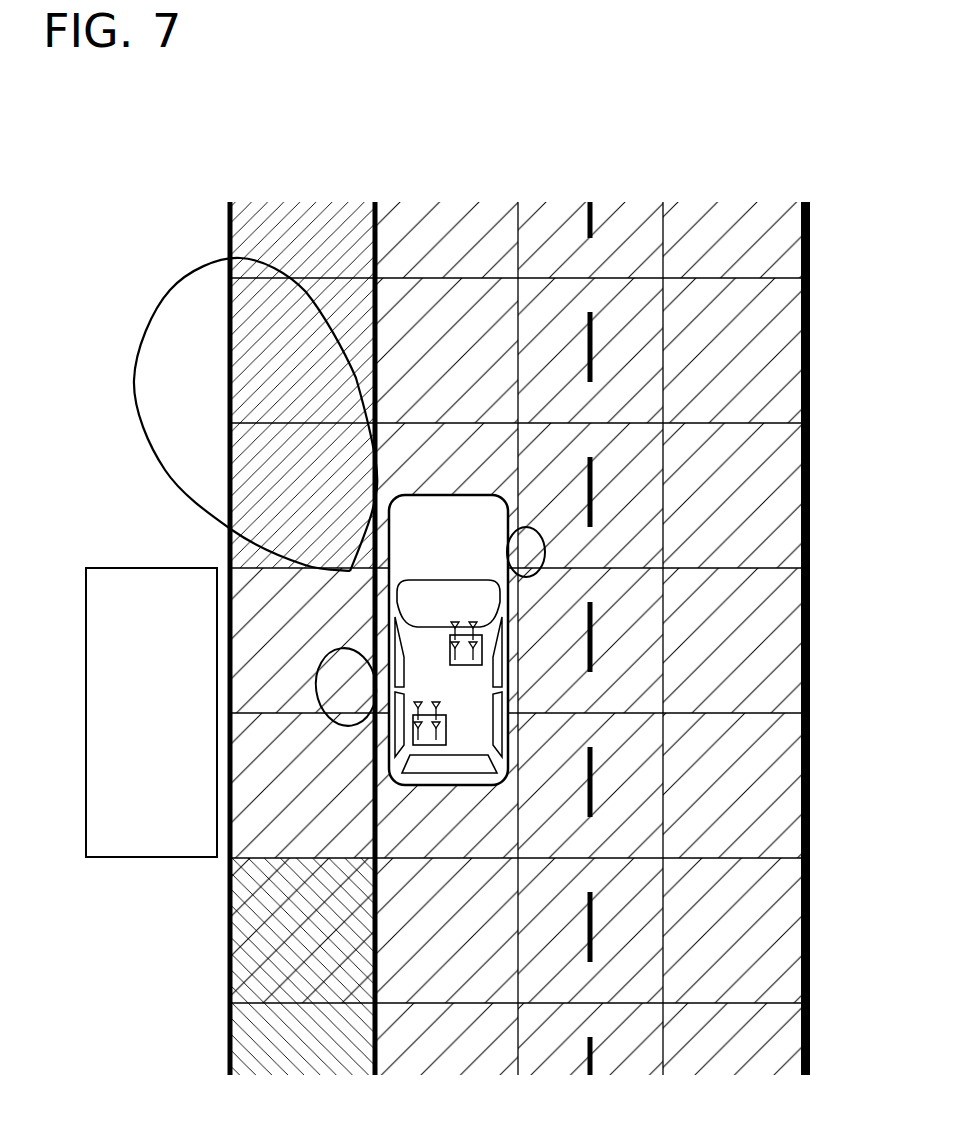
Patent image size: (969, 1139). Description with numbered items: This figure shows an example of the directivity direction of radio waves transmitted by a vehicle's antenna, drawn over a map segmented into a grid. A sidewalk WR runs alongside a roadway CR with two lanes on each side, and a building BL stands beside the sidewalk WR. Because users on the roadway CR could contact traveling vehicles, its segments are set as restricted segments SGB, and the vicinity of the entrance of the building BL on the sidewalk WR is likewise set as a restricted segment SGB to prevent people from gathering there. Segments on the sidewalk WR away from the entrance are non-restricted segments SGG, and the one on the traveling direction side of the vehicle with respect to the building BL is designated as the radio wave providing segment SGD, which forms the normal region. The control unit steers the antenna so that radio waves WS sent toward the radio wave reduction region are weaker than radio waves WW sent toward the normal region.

The sidewalk WR is at (302, 181).
The roadway CR is at (567, 181).
The radio wave providing segment SGD is at (258, 232).
The restricted segment SGB is at (257, 616).
The non-restricted segment SGG is at (258, 964).
The radio waves transmitted to the radio wave reduction region WS is at (134, 382).
The radio waves transmitted to the normal region WW is at (316, 679).
The building BL is at (150, 858).